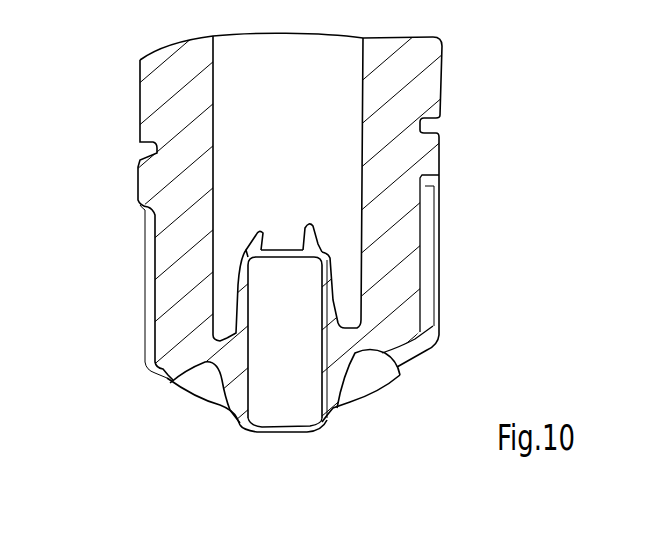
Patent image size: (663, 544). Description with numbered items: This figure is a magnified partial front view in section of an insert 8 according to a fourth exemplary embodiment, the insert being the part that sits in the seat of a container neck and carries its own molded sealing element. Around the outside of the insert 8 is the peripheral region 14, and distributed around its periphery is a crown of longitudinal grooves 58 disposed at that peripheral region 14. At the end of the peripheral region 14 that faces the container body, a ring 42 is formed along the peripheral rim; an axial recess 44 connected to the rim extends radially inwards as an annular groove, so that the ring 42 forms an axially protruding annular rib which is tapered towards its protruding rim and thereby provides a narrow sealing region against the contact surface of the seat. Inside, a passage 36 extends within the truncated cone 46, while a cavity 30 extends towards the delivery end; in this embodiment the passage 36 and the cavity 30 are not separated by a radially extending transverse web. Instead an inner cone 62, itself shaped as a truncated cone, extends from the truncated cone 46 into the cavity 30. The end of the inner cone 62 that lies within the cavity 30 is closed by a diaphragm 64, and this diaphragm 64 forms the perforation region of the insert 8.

The insert 8 is at (124, 151).
The peripheral region 14 is at (140, 183).
The cavity 30 is at (359, 165).
The passage 36 is at (245, 393).
The ring 42 is at (170, 383).
The axial recess 44 is at (367, 350).
The truncated cone 46 is at (240, 415).
The longitudinal grooves 58 is at (150, 253).
The inner cone 62 is at (330, 268).
The diaphragm 64 is at (273, 247).